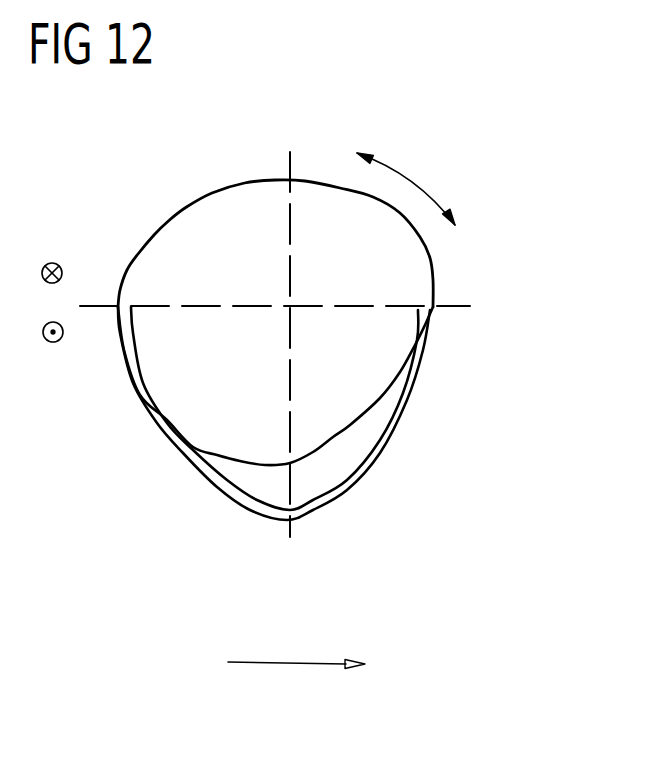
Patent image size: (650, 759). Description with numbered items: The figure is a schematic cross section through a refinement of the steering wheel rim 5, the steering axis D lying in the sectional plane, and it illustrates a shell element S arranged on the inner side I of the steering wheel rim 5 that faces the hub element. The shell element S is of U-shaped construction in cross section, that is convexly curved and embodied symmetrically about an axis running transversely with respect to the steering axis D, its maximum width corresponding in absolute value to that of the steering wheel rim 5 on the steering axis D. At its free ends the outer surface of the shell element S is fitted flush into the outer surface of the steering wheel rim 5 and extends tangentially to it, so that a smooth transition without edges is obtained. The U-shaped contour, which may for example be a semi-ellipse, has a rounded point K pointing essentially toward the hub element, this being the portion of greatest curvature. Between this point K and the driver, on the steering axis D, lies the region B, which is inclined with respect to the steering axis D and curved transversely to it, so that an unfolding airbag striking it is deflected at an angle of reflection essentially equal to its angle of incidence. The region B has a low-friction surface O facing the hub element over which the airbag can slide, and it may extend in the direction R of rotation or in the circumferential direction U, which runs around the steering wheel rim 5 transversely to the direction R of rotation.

The steering wheel rim 5 is at (230, 220).
The circumferential direction U is at (406, 182).
The region B is at (462, 277).
The direction of rotation R is at (240, 302).
The inner side I is at (241, 452).
The surface O is at (429, 380).
The shell element S is at (354, 495).
The rounded point K is at (276, 533).
The steering axis D is at (296, 645).